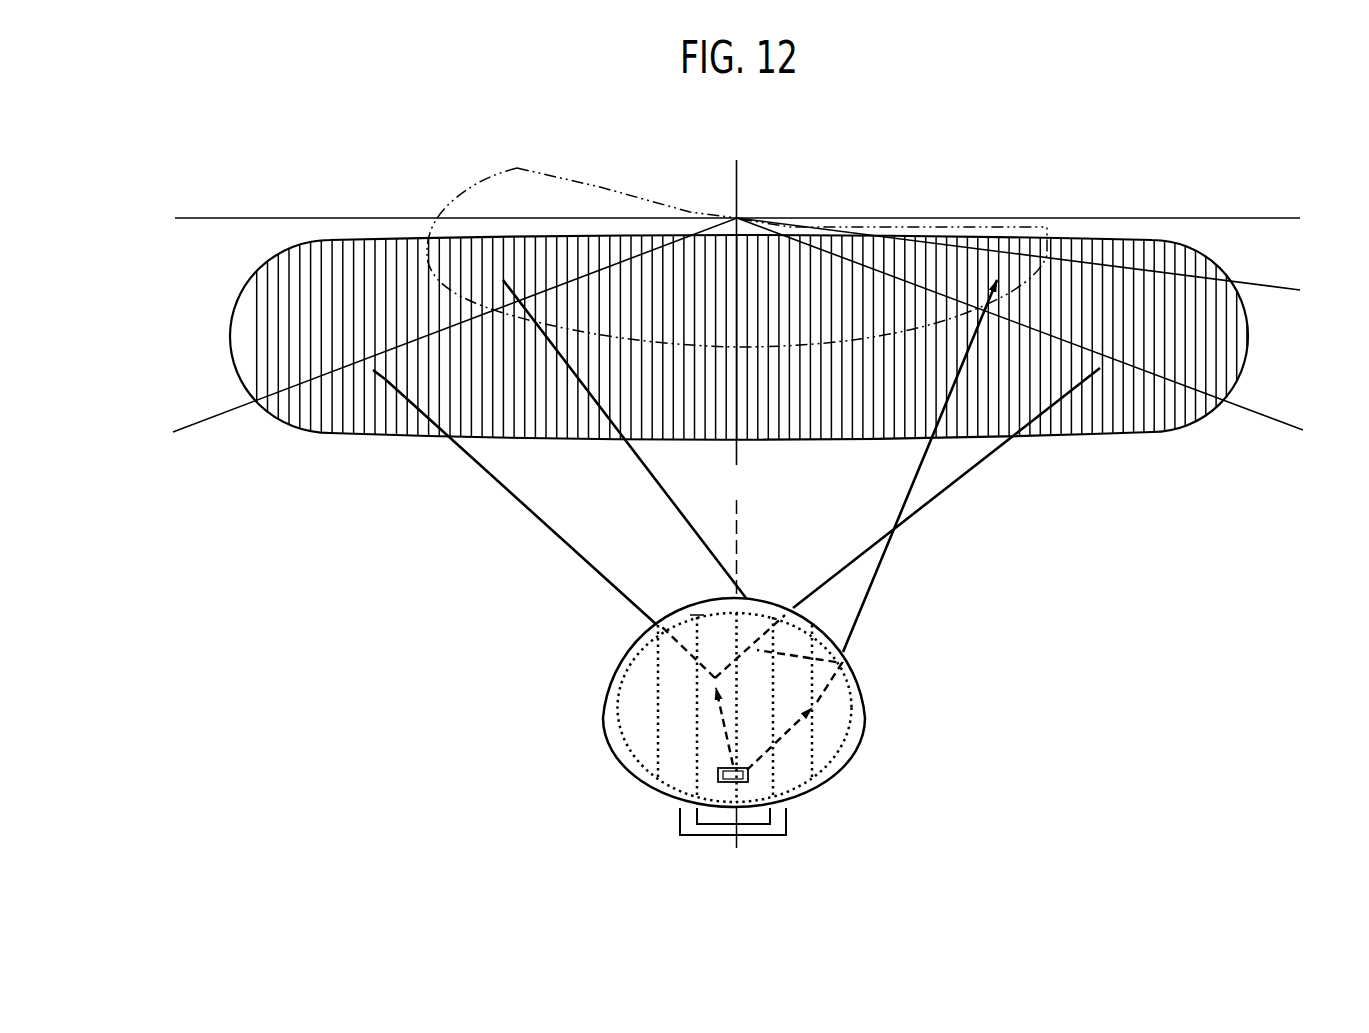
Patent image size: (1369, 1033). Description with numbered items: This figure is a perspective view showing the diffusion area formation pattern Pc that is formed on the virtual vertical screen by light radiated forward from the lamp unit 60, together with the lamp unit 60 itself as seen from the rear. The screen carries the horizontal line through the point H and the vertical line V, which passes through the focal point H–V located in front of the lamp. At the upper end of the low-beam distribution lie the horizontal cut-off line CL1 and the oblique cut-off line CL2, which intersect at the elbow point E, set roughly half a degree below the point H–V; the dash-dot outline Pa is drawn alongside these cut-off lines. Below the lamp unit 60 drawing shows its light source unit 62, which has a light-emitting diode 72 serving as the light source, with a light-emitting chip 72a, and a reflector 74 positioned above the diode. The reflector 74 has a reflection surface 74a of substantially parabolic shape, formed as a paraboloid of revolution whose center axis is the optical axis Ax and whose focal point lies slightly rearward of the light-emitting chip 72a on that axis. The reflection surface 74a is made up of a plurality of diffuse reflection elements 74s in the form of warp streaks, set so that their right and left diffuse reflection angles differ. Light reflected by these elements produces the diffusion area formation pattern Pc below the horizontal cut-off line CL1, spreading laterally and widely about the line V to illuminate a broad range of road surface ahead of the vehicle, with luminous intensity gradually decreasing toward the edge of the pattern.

The lamp unit 60 is at (804, 696).
The light source unit 62 is at (597, 636).
The light-emitting diode 72 is at (726, 764).
The light-emitting chip 72a is at (716, 770).
The reflector 74 is at (741, 679).
The reflection surface 74a is at (697, 606).
The diffuse reflection elements 74s is at (640, 712).
The point H–V H is at (737, 218).
The line V– V is at (736, 314).
The elbow point E is at (747, 214).
The optical axis Ax is at (740, 545).
The additional light distribution pattern Pa is at (468, 176).
The diffusion area formation pattern Pc is at (1092, 228).
The horizontal cut-off line CL1 is at (890, 224).
The oblique cut-off line CL2 is at (614, 188).